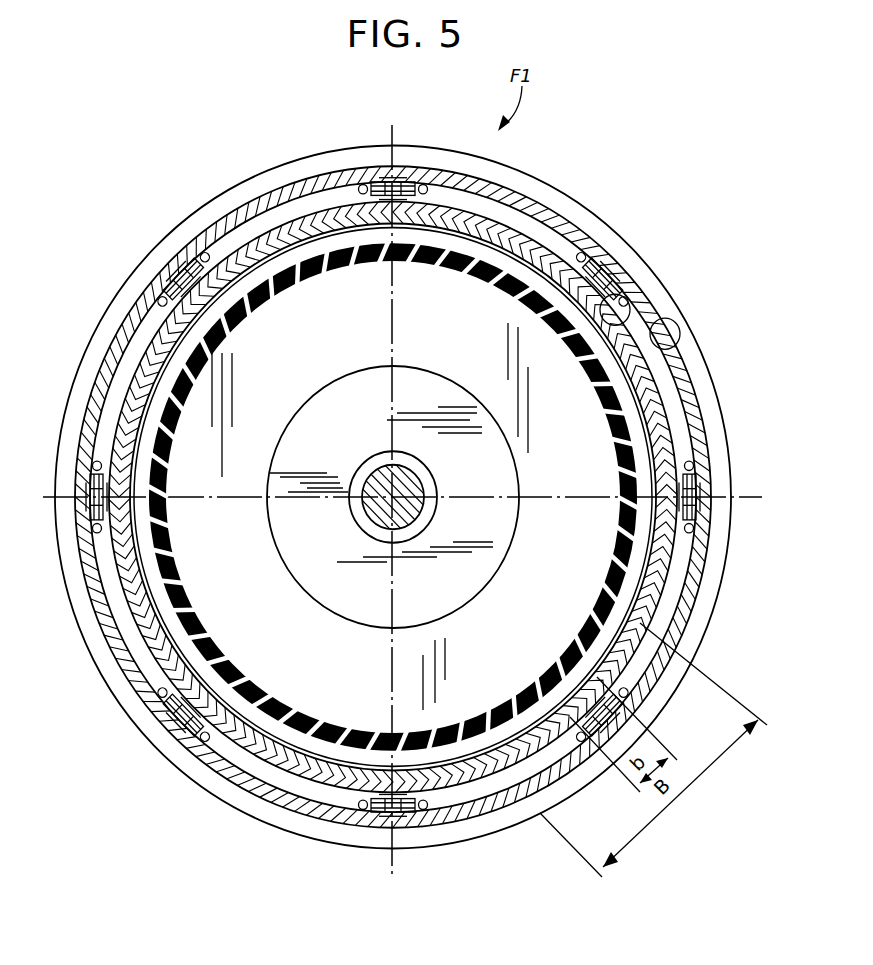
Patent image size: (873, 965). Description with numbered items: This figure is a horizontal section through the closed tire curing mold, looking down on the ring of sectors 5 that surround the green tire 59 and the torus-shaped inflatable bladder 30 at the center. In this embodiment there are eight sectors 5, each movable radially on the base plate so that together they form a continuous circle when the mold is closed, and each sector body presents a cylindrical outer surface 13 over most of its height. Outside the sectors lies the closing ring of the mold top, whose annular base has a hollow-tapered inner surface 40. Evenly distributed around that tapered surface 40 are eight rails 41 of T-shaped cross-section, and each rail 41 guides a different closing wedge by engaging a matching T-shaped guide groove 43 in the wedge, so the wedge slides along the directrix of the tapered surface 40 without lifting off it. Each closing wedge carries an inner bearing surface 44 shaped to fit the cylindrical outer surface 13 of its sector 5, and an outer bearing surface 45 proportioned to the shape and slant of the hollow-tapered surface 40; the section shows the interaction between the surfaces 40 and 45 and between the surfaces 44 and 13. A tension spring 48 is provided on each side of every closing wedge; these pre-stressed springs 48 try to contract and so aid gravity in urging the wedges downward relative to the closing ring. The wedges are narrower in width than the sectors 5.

The sector 5 is at (437, 213).
The cylindrical outer surface 13 is at (647, 378).
The inflatable bladder 30 is at (320, 716).
The hollow-tapered inner surface 40 is at (683, 353).
The rail 41 is at (612, 275).
The guide groove 43 is at (618, 282).
The bearing surface 44 is at (628, 323).
The bearing surface 45 is at (607, 253).
The tension spring 48 is at (362, 180).
The green tire 59 is at (187, 627).